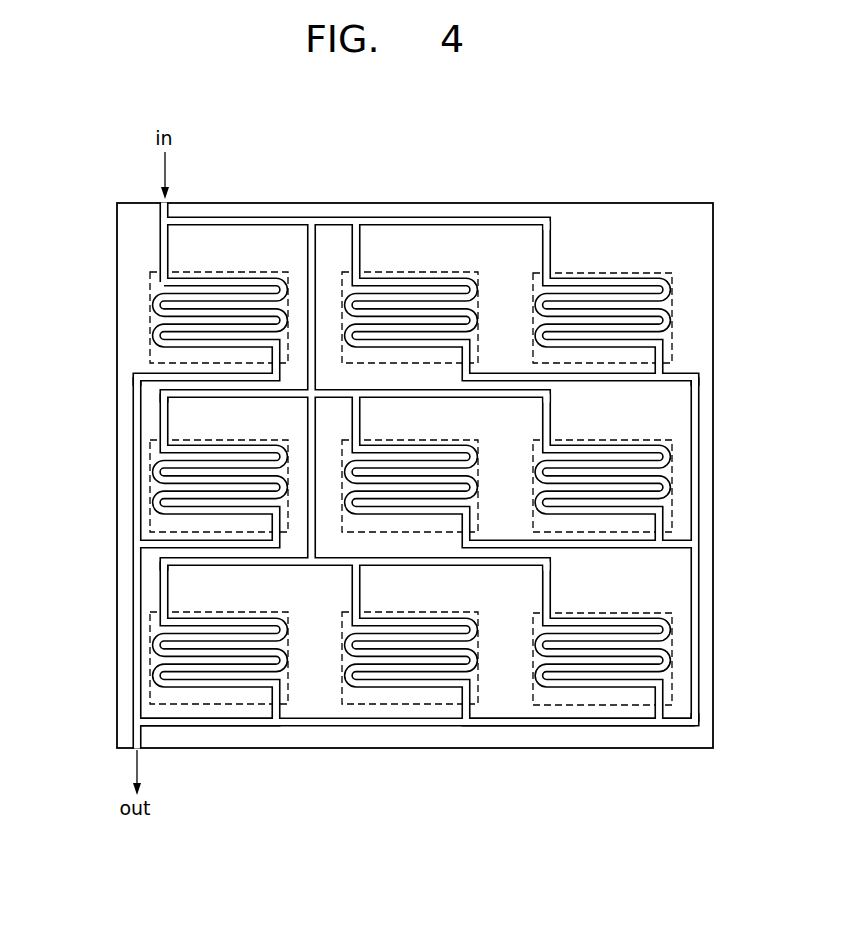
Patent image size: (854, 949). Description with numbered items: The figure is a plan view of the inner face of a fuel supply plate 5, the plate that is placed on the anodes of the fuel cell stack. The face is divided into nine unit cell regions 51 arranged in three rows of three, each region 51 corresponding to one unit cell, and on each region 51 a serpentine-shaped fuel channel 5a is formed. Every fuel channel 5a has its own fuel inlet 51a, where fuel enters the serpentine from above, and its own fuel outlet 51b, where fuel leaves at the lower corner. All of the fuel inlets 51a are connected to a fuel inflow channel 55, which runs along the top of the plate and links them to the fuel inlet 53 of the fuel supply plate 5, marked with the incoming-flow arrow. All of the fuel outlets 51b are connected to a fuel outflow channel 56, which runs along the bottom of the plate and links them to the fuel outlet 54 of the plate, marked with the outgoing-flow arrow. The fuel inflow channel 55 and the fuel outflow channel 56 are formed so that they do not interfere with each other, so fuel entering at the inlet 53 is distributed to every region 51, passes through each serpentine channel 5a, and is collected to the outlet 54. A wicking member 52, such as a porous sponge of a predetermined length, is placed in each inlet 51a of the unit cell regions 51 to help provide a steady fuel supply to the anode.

The fuel supply plate 5 is at (592, 195).
The fuel channel 5a is at (161, 295).
The unit cell region 51 is at (247, 272).
The fuel inlet 51a is at (162, 265).
The fuel outlet 51b is at (276, 354).
The wicking member 52 is at (168, 242).
The fuel inlet 53 is at (163, 200).
The fuel outlet 54 is at (140, 748).
The fuel inflow channel 55 is at (453, 217).
The fuel outflow channel 56 is at (503, 728).